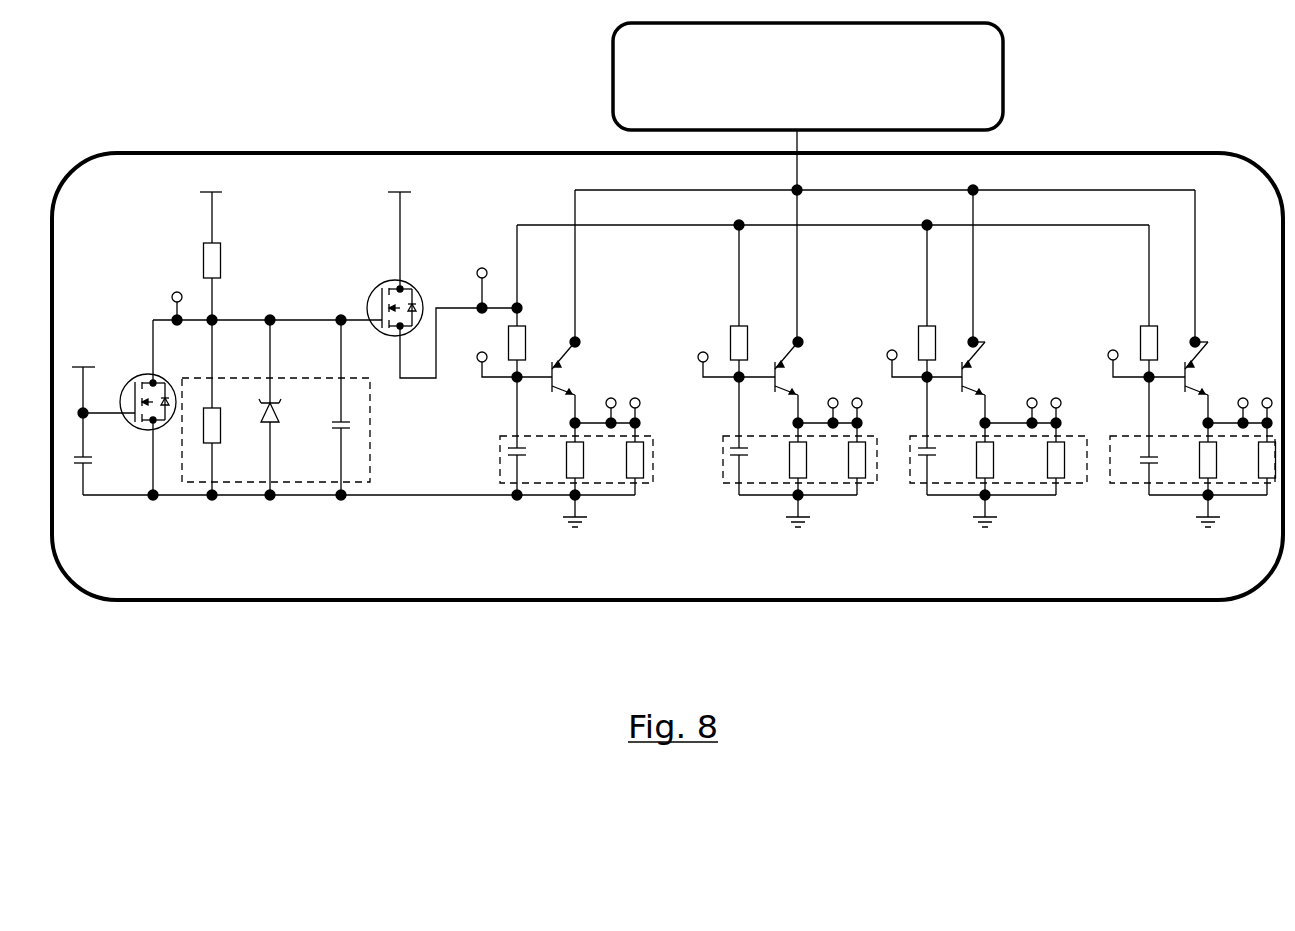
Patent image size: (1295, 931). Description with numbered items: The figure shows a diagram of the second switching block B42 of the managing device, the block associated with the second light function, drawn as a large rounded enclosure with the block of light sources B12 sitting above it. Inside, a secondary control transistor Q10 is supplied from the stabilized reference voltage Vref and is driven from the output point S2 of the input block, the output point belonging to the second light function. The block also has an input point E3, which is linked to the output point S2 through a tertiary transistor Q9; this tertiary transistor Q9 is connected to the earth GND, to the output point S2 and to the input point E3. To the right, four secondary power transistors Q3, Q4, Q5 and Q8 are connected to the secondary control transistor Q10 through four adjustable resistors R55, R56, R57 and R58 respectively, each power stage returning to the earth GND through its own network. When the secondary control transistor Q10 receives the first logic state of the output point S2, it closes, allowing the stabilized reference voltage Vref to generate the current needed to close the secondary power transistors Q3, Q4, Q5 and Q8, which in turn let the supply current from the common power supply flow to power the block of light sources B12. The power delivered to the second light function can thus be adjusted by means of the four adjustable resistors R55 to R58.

The second switching block B42 is at (433, 152).
The block of light sources B12 is at (808, 106).
The output point S2 is at (217, 331).
The input point E3 is at (103, 413).
The stabilized reference voltage Vref is at (410, 228).
The tertiary transistor Q9 is at (159, 407).
The secondary control transistor Q10 is at (442, 313).
The adjustable resistor R55 is at (540, 378).
The adjustable resistor R56 is at (762, 378).
The adjustable resistor R57 is at (944, 371).
The adjustable resistor R58 is at (1167, 375).
The secondary power transistor Q3 is at (581, 389).
The secondary power transistor Q4 is at (798, 389).
The secondary power transistor Q5 is at (986, 389).
The secondary power transistor Q8 is at (1215, 389).
The earth GND is at (899, 535).